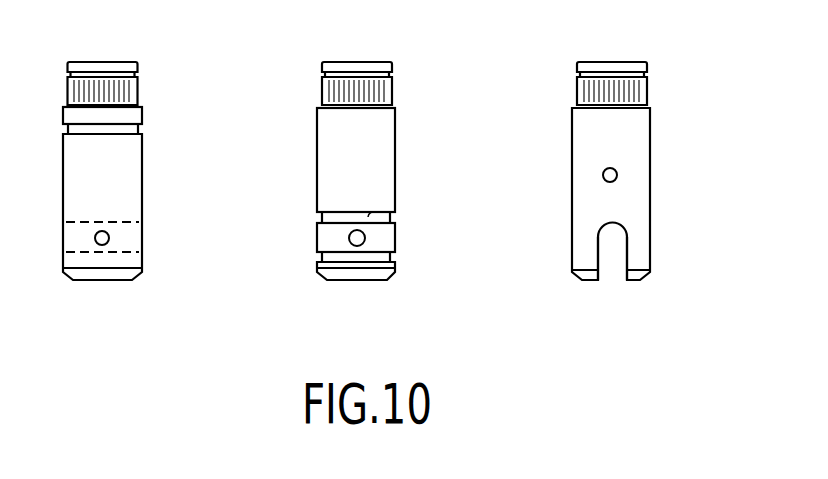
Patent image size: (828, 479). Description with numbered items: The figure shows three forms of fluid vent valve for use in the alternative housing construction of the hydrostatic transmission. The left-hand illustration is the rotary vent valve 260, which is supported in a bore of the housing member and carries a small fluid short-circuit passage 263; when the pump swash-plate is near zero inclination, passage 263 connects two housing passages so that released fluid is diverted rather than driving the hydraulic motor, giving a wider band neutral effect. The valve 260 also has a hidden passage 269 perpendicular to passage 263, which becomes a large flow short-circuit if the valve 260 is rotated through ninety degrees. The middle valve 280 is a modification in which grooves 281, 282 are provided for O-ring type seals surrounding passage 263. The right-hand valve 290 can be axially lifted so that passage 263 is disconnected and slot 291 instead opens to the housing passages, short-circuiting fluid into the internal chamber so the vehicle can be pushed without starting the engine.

The rotary vent valve 260 is at (133, 177).
The passage 263 is at (110, 235).
The hidden passage 269 is at (122, 250).
The valve 280 is at (385, 152).
The groove 281 is at (366, 215).
The groove 282 is at (370, 253).
The valve 290 is at (643, 152).
The slot 291 is at (622, 243).